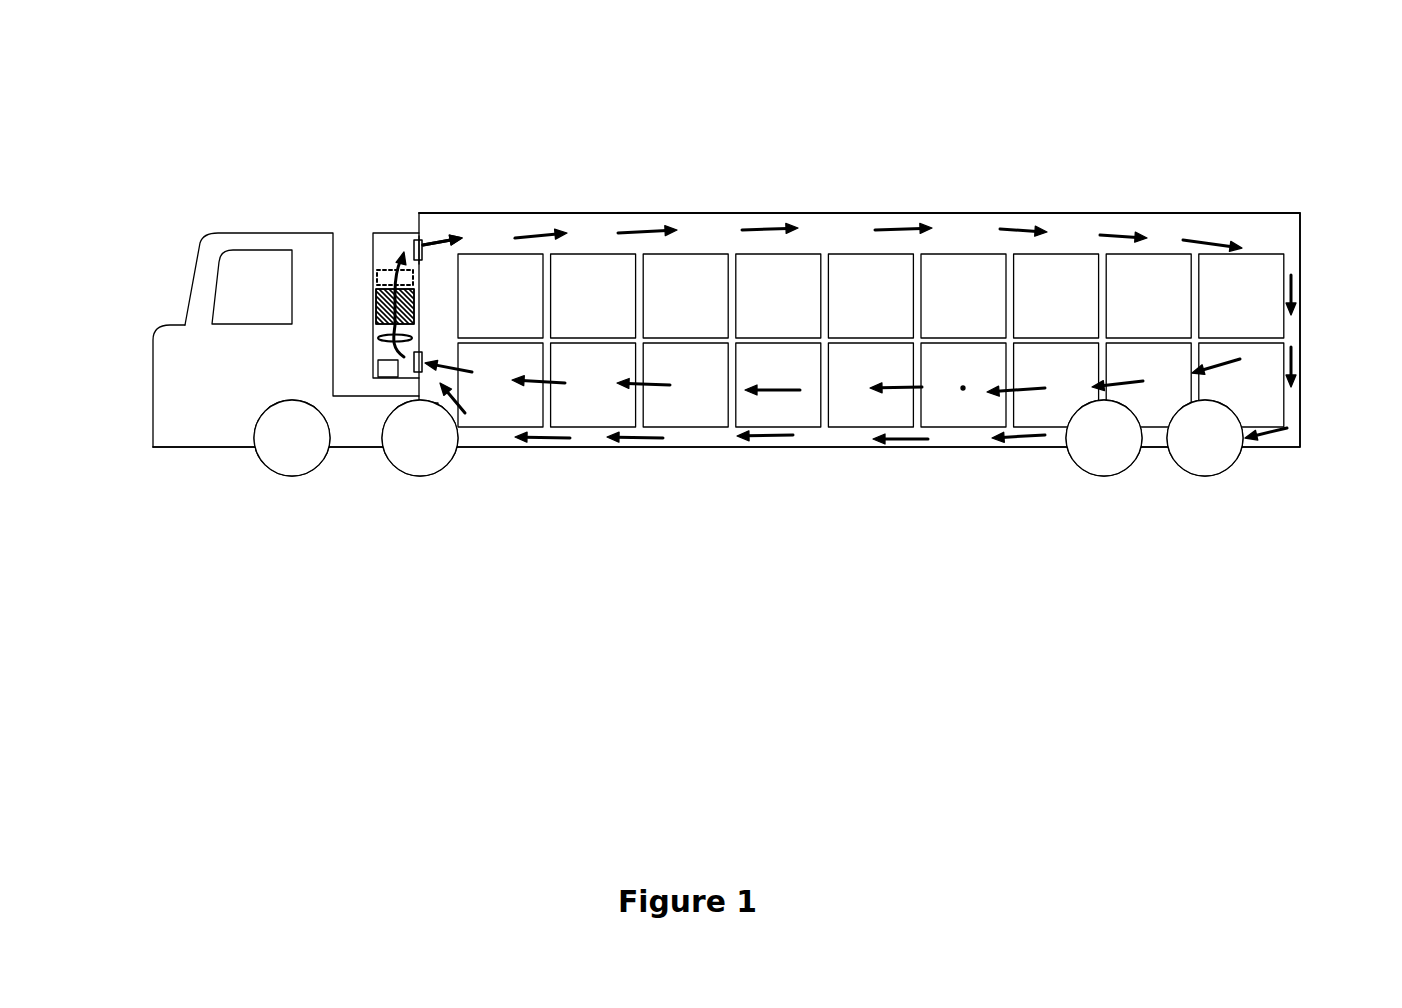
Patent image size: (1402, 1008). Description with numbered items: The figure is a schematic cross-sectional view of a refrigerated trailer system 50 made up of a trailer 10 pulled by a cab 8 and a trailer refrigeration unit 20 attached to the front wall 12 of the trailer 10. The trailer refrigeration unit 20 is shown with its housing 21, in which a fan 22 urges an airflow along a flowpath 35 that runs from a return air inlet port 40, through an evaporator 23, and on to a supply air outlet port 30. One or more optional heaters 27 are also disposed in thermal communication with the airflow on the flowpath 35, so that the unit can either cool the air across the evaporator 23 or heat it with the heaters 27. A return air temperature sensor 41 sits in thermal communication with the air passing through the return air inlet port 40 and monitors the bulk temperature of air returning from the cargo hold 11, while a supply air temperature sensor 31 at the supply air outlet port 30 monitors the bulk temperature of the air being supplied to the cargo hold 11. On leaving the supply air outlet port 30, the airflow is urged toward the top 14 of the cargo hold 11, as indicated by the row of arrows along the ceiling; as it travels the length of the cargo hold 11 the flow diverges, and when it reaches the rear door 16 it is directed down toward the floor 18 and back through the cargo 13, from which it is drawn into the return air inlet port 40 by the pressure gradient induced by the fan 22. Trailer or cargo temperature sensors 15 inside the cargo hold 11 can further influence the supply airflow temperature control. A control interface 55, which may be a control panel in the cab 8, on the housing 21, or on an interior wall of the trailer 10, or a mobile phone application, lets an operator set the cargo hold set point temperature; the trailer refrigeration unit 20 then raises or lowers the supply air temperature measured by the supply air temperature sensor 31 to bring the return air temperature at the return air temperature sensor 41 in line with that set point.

The cab 8 is at (168, 240).
The trailer 10 is at (618, 213).
The cargo hold 11 is at (851, 250).
The front wall 12 is at (418, 239).
The cargo 13 is at (696, 306).
The top 14 is at (918, 202).
The cargo temperature sensors 15 is at (963, 388).
The rear door 16 is at (1302, 240).
The floor 18 is at (892, 458).
The trailer refrigeration unit 20 is at (373, 240).
The housing 21 is at (376, 309).
The fan 22 is at (378, 338).
The evaporator 23 is at (376, 290).
The heaters 27 is at (388, 271).
The supply air outlet port 30 is at (423, 240).
The supply air temperature sensor 31 is at (412, 245).
The flowpath 35 is at (402, 355).
The return air inlet port 40 is at (465, 413).
The return air temperature sensor 41 is at (413, 367).
The refrigerated trailer system 50 is at (1128, 77).
The control interface 55 is at (378, 377).